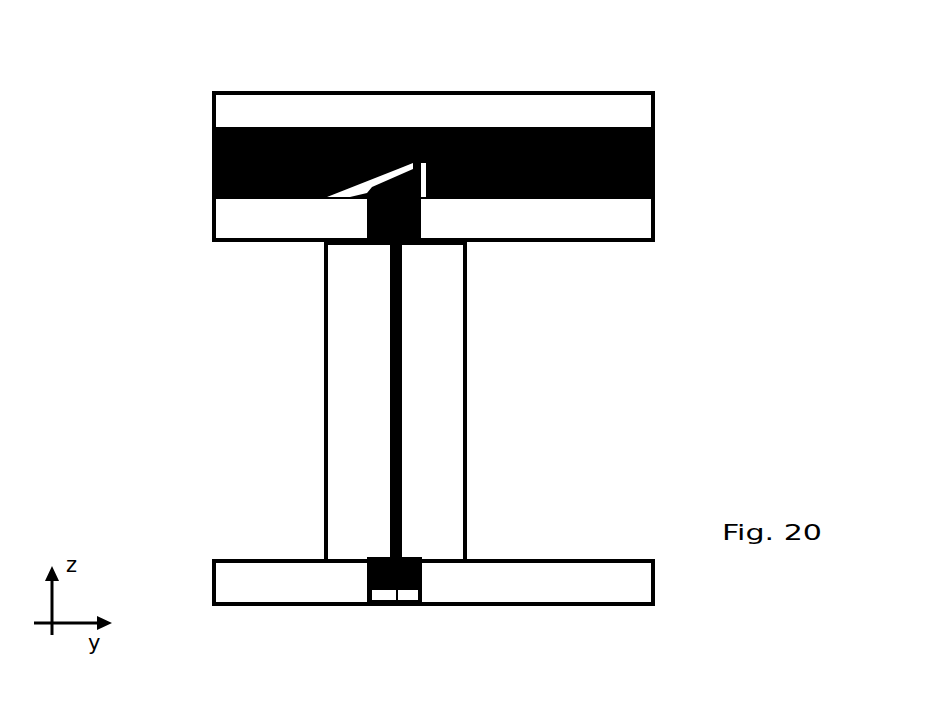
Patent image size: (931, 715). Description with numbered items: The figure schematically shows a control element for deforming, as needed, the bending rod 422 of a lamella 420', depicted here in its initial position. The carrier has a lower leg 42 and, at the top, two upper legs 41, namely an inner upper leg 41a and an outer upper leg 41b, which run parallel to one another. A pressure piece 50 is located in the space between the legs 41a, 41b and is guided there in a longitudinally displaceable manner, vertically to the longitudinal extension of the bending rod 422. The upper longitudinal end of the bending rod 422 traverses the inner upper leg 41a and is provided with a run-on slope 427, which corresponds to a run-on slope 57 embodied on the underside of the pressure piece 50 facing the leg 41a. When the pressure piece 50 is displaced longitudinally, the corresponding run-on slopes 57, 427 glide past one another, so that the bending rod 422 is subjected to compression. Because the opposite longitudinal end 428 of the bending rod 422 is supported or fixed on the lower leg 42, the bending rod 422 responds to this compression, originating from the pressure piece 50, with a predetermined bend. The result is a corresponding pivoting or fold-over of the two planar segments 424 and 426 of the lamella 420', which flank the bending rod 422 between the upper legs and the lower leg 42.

The upper legs 41 is at (724, 133).
The inner upper leg 41a is at (645, 215).
The outer upper leg 41b is at (635, 105).
The pressure piece 50 is at (653, 162).
The run-on slope 427 is at (388, 130).
The run-on slope 57 is at (355, 190).
The lamella 420' is at (357, 402).
The planar segment 424 is at (333, 327).
The planar segment 426 is at (448, 349).
The bending rod 422 is at (393, 388).
The lower leg 42 is at (647, 585).
The opposite longitudinal end 428 is at (397, 600).